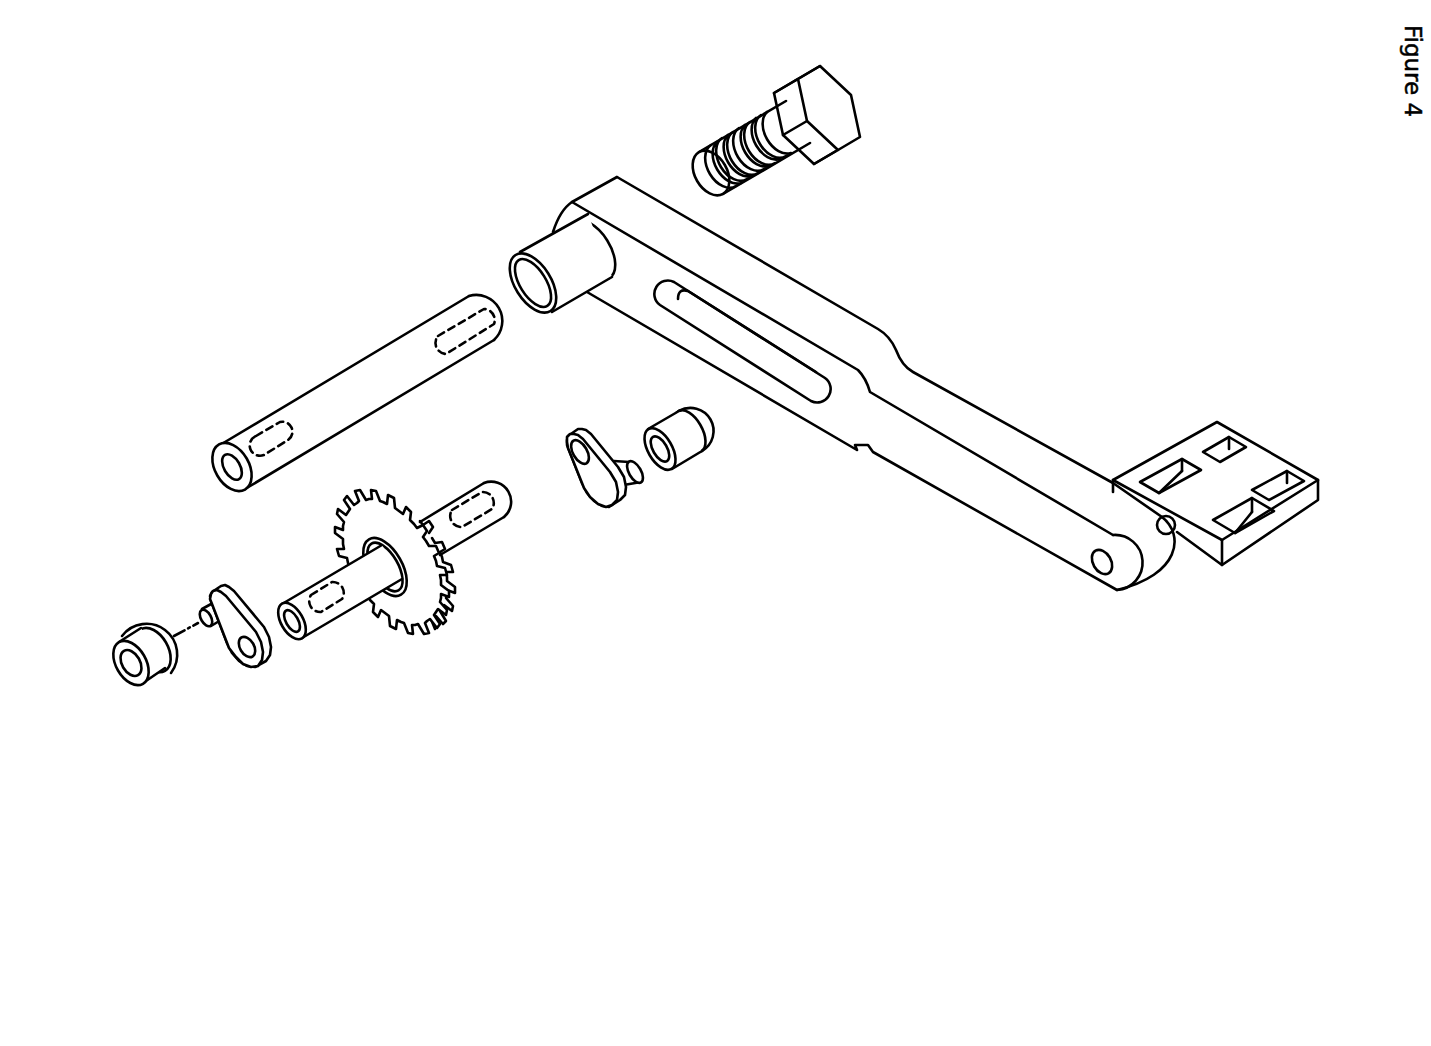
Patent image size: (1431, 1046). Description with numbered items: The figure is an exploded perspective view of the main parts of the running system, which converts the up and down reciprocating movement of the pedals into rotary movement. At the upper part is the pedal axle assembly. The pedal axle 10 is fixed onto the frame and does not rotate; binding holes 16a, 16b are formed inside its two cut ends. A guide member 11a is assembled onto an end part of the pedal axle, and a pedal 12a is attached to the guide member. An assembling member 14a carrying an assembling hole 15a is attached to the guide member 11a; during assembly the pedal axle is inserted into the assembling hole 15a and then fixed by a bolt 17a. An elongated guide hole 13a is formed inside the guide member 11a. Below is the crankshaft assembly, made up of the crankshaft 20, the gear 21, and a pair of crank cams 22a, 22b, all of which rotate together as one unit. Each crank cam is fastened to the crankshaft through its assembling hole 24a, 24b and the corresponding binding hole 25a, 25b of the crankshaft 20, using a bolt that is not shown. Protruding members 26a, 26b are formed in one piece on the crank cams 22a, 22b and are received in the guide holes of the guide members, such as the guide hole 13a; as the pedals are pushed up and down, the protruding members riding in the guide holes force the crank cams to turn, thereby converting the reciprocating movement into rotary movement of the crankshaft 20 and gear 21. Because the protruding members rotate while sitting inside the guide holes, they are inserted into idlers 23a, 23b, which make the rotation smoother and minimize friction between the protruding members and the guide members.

The pedal axle 10 is at (308, 375).
The guide member 11a is at (762, 383).
The pedal 12a is at (1240, 544).
The guide hole 13a is at (783, 372).
The assembling member 14a is at (553, 245).
The assembling hole 15a is at (535, 300).
The binding hole 16a is at (433, 315).
The binding hole 16b is at (203, 398).
The bolt 17a is at (852, 122).
The crankshaft 20 is at (397, 611).
The gear 21 is at (410, 615).
The crank cam 22a is at (540, 512).
The crank cam 22b is at (207, 618).
The idler 23a is at (688, 468).
The idler 23b is at (158, 670).
The assembling hole 24a is at (573, 447).
The assembling hole 24b is at (243, 667).
The binding hole 25a is at (477, 540).
The binding hole 25b is at (317, 613).
The protruding member 26a is at (622, 450).
The protruding member 26b is at (203, 607).